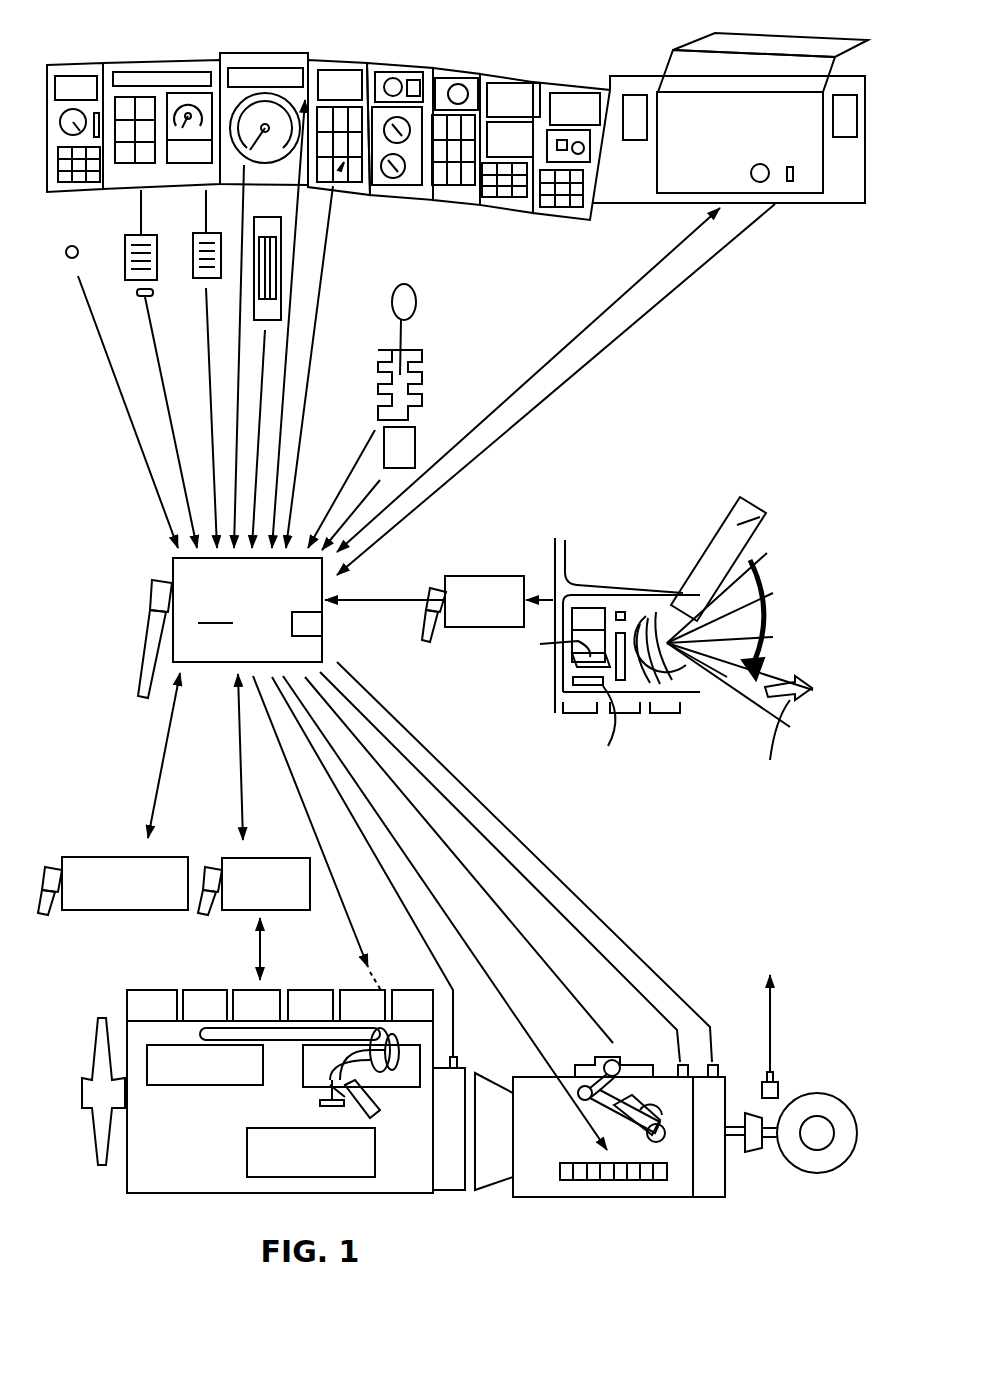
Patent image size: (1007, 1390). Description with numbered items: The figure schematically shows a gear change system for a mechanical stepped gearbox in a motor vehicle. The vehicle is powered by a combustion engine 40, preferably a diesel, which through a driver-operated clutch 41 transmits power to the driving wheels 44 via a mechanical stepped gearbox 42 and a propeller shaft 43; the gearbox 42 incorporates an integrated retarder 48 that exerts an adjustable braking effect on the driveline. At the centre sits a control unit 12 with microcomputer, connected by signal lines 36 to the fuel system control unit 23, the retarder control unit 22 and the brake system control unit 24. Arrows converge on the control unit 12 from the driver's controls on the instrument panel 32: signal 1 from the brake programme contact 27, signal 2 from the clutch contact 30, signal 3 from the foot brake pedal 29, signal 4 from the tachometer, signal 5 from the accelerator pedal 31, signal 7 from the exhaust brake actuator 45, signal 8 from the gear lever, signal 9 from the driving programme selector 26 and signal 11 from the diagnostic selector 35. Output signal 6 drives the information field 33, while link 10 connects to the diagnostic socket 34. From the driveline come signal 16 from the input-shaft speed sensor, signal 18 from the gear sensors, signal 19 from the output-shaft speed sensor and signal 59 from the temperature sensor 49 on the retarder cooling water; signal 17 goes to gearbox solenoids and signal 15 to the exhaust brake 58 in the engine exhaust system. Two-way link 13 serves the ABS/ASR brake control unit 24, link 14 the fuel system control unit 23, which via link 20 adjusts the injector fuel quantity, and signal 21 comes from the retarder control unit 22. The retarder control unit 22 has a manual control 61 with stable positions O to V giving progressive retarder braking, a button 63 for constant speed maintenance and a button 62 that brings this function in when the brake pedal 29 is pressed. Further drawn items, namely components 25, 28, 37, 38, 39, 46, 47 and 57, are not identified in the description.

The signal 1 is at (100, 338).
The signal 2 is at (163, 378).
The signal 3 is at (212, 404).
The signal 4 is at (233, 467).
The signal 5 is at (262, 368).
The signal 6 is at (287, 418).
The signal 7 is at (303, 455).
The signal 8 is at (348, 478).
The signal 9 is at (367, 497).
The link 10 is at (575, 303).
The signal 11 is at (670, 290).
The control unit 12 is at (247, 610).
The link 13 is at (163, 700).
The link 14 is at (225, 780).
The signal 15 is at (283, 760).
The signal 16 is at (410, 923).
The signal 17 is at (433, 898).
The signal 18 is at (393, 780).
The signal 19 is at (371, 722).
The link 20 is at (258, 950).
The signal 21 is at (376, 600).
The retarder control unit 22 is at (470, 576).
The fuel system control unit 23 is at (135, 840).
The vehicle brake system control unit 24 is at (112, 855).
The selector lever 25 is at (408, 290).
The driving programme selector 26 is at (415, 455).
The brake programme contact 27 is at (50, 218).
The pedal 28 is at (145, 245).
The brake pedal 29 is at (188, 267).
The clutch contact 30 is at (140, 293).
The accelerator pedal 31 is at (270, 223).
The instrument panel 32 is at (405, 55).
The information field 33 is at (278, 78).
The diagnostic socket 34 is at (750, 172).
The diagnostic selector 35 is at (795, 175).
The signal lines 36 is at (465, 651).
The shifting mechanism 37 is at (652, 1145).
The speed sensor 38 is at (778, 1085).
The signal line 39 is at (262, 55).
The combustion engine 40 is at (178, 1062).
The clutch 41 is at (495, 1060).
The mechanical stepped gearbox 42 is at (543, 1185).
The propeller shaft 43 is at (755, 1150).
The driving wheels 44 is at (842, 1165).
The exhaust brake actuator 45 is at (342, 165).
The sensor 46 is at (675, 1050).
The sensor 47 is at (458, 1060).
The retarder 48 is at (705, 1170).
The temperature sensor 49 is at (718, 1060).
The interface 57 is at (300, 625).
The exhaust brake 58 is at (320, 1100).
The signal 59 is at (364, 690).
The manual control 61 is at (708, 545).
The button 62 is at (585, 617).
The button 63 is at (735, 498).